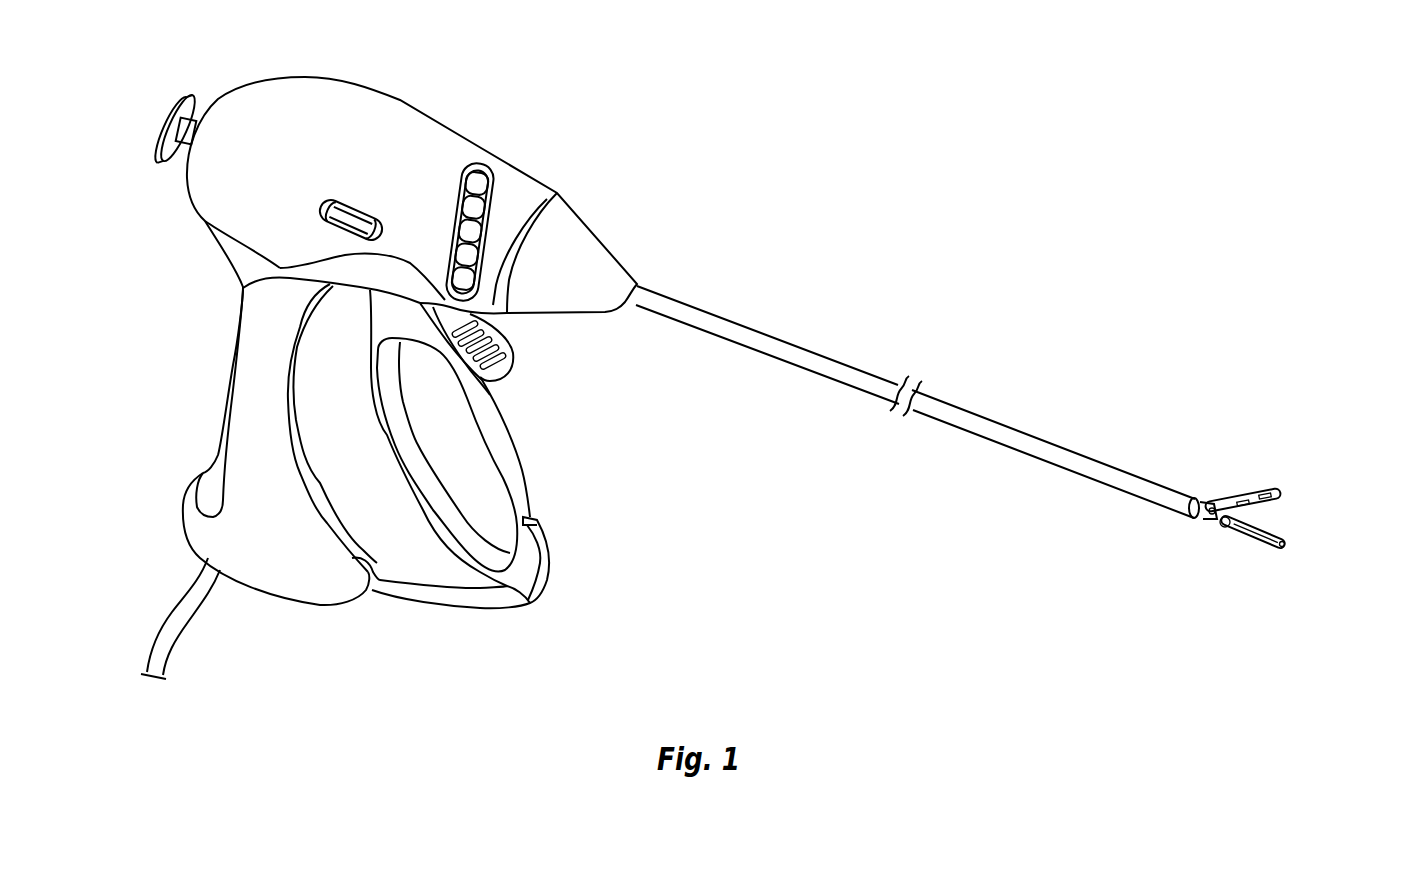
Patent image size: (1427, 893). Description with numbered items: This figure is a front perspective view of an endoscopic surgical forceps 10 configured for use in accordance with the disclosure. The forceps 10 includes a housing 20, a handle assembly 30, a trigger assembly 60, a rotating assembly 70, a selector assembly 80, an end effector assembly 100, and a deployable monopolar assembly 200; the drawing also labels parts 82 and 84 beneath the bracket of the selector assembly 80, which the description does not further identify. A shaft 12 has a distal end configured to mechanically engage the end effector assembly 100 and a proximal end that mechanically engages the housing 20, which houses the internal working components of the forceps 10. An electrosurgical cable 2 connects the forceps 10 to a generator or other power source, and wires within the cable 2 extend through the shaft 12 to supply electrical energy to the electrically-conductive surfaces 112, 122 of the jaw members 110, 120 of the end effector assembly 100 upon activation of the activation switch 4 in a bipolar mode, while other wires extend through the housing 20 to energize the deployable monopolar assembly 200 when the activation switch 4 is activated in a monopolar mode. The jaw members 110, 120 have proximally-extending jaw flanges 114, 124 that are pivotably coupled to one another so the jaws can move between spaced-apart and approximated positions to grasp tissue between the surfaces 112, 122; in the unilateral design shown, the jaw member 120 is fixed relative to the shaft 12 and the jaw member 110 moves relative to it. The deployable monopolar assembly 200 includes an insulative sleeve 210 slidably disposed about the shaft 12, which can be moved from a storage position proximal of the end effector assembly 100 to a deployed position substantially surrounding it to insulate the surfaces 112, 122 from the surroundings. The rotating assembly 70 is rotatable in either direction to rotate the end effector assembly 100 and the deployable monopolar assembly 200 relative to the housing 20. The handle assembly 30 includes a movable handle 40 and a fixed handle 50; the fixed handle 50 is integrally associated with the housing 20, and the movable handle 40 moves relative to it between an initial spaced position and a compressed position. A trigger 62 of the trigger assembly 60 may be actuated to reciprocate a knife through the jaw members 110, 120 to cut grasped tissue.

The electrosurgical cable 2 is at (160, 655).
The activation switch 4 is at (360, 205).
The forceps 10 is at (836, 224).
The shaft 12 is at (1196, 522).
The housing 20 is at (424, 110).
The handle assembly 30 is at (430, 630).
The movable handle 40 is at (520, 473).
The fixed handle 50 is at (238, 415).
The trigger assembly 60 is at (516, 380).
The trigger 62 is at (505, 330).
The rotating assembly 70 is at (478, 185).
The selector assembly 80 is at (155, 76).
The knob stem 82 is at (181, 160).
The knob 84 is at (163, 155).
The end effector assembly 100 is at (1362, 481).
The jaw member 110 is at (1261, 493).
The electrically-conductive surface 112 is at (1283, 500).
The jaw flange 114 is at (1212, 508).
The jaw member 120 is at (1259, 547).
The electrically-conductive surface 122 is at (1287, 540).
The jaw flange 124 is at (1221, 528).
The deployable monopolar assembly 200 is at (1076, 410).
The insulative sleeve 210 is at (973, 430).